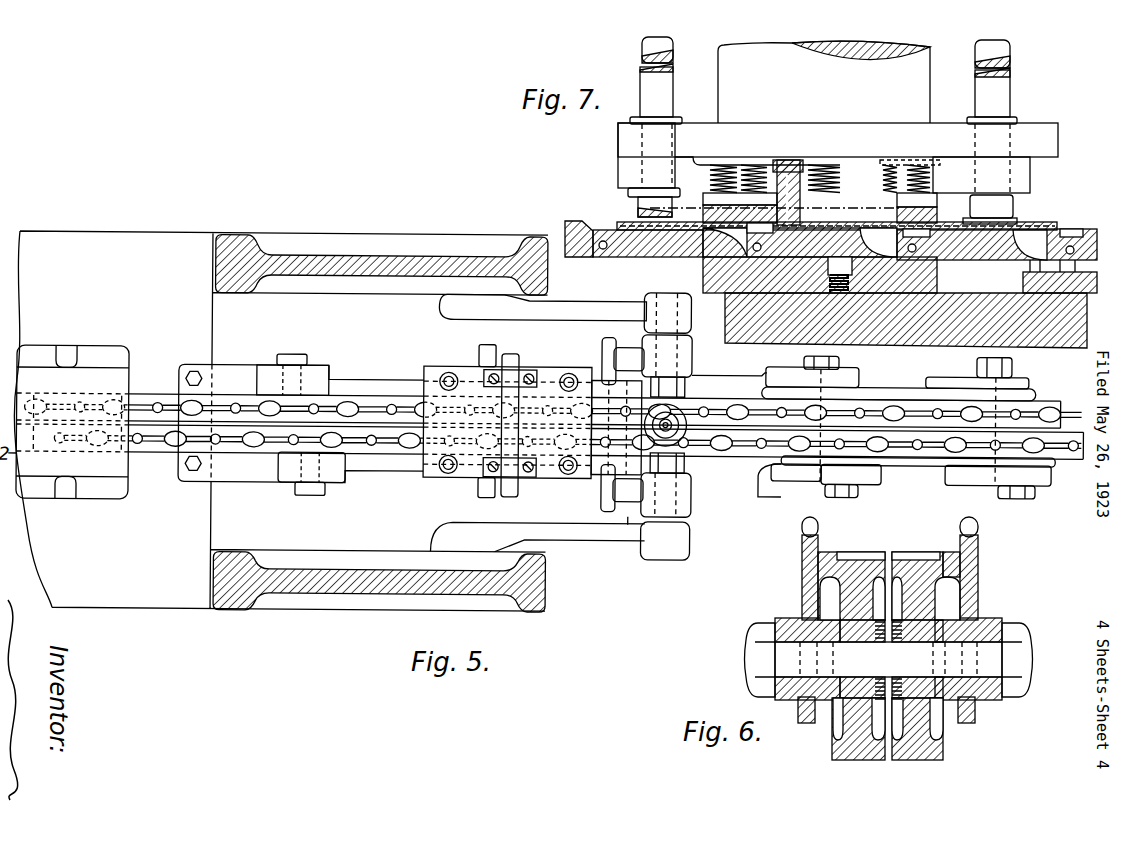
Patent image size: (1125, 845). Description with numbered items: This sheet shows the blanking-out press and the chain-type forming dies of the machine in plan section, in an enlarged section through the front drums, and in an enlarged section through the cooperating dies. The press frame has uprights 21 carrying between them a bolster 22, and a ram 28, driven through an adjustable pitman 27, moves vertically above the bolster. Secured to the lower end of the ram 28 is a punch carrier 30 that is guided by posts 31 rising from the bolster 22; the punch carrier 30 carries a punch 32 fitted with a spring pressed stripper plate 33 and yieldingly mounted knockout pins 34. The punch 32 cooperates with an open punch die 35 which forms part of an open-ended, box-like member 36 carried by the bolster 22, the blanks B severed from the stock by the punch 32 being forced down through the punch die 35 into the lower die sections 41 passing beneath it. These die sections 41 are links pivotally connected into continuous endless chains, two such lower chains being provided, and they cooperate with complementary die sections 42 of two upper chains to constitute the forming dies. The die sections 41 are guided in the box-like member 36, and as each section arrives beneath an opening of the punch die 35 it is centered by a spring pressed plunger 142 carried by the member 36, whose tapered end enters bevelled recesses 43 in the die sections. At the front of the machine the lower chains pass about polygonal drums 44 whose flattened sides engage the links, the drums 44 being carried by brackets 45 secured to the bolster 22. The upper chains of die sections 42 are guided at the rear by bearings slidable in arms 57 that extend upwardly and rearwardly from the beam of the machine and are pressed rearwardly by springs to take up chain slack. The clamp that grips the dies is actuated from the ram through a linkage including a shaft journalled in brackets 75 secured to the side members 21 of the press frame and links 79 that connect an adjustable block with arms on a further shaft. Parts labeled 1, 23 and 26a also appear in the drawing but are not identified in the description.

In FIG. 5, the chain 1 is at (762, 478).
In FIG. 5, the uprights 21 is at (458, 246).
In FIG. 5, the bolster 22 is at (138, 610).
In FIG. 7, the bolster 22 is at (1084, 347).
In FIG. 5, the plate 23 is at (493, 362).
In FIG. 5, the pin 26a is at (641, 505).
In FIG. 5, the pitman 27 is at (693, 517).
In FIG. 7, the ram 28 is at (922, 99).
In FIG. 5, the punch carrier 30 is at (695, 362).
In FIG. 7, the punch carrier 30 is at (1030, 128).
In FIG. 7, the posts 31 is at (1108, 103).
In FIG. 7, the punch 32 is at (862, 210).
In FIG. 7, the stripper plate 33 is at (935, 204).
In FIG. 7, the knockout pins 34 is at (800, 208).
In FIG. 5, the punch die 35 is at (98, 380).
In FIG. 7, the punch die 35 is at (718, 222).
In FIG. 5, the box-like member 36 is at (92, 345).
In FIG. 7, the box-like member 36 is at (708, 268).
In FIG. 5, the lower die sections 41 is at (375, 452).
In FIG. 7, the lower die sections 41 is at (642, 257).
In FIG. 5, the complementary die sections 42 is at (880, 395).
In FIG. 7, the bevelled recesses 43 is at (687, 257).
In FIG. 6, the drums 44 is at (907, 560).
In FIG. 6, the brackets 45 is at (803, 570).
In FIG. 5, the arms 57 is at (925, 462).
In FIG. 5, the brackets 75 is at (572, 293).
In FIG. 5, the links 79 is at (610, 404).
In FIG. 7, the spring pressed plunger 142 is at (930, 272).
In FIG. 7, the blanks B is at (840, 228).